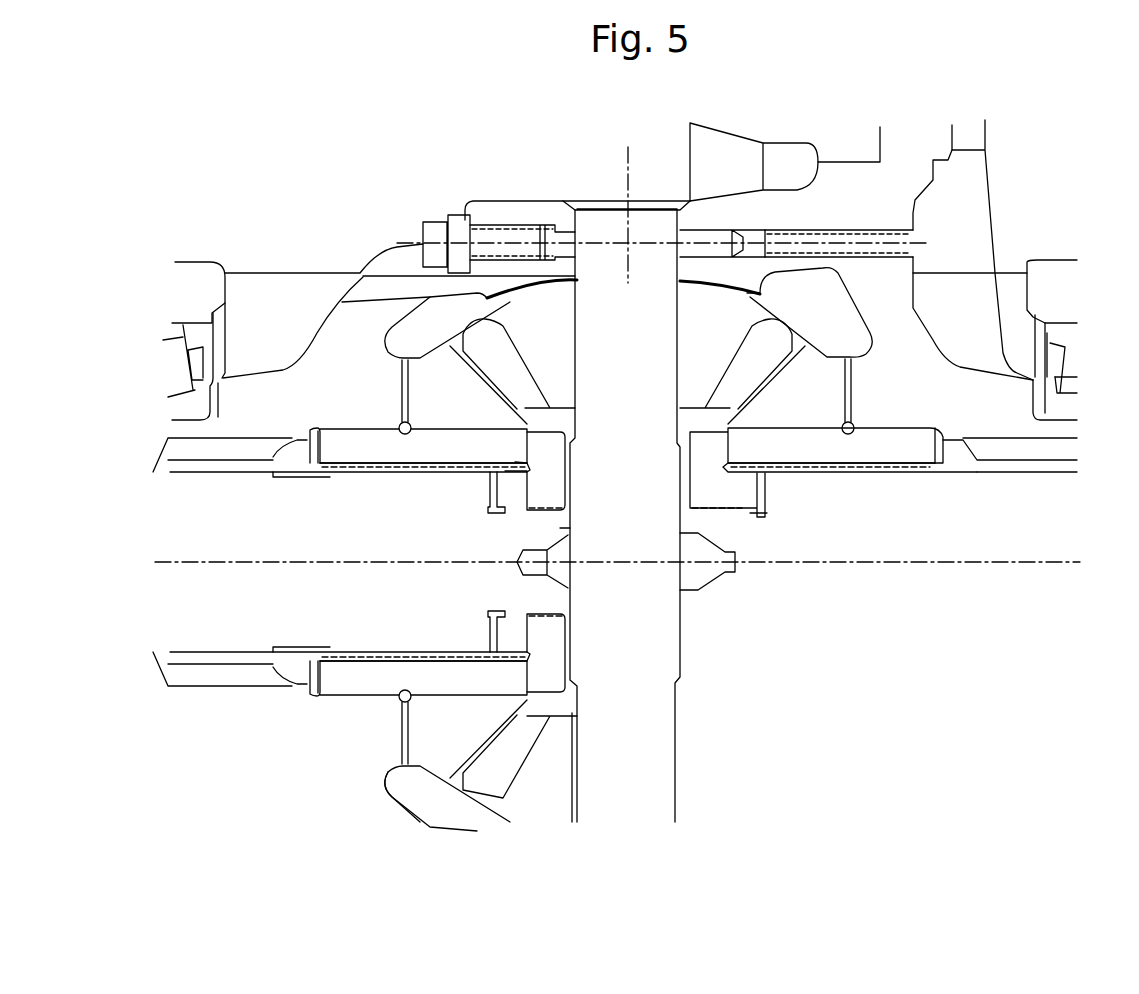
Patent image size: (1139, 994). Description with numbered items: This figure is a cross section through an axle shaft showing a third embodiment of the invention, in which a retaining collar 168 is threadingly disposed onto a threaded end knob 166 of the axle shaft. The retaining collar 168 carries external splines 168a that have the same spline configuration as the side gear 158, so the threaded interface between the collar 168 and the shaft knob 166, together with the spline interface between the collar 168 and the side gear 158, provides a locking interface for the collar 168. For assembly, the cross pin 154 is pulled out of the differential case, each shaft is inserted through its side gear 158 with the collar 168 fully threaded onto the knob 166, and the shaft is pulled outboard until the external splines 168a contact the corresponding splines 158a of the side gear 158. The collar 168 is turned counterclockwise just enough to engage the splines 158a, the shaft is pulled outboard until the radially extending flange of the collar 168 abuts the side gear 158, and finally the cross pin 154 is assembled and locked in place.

The cross pin 154 is at (646, 333).
The side gear 158 is at (460, 399).
The splines of the side gear 158a is at (490, 485).
The threaded end knob 166 is at (562, 526).
The retaining collar 168 is at (552, 490).
The external splines 168a is at (512, 462).